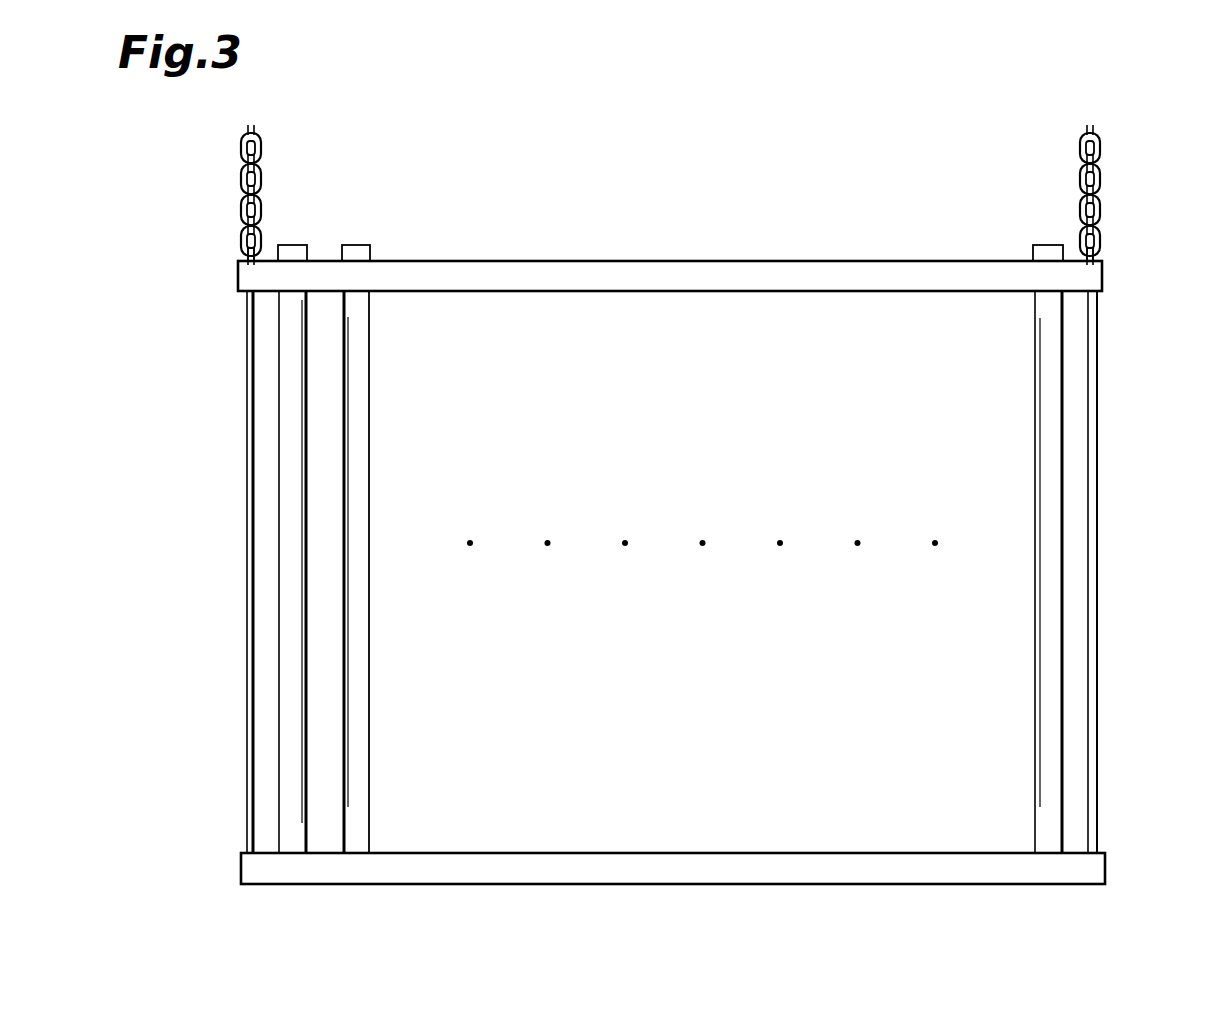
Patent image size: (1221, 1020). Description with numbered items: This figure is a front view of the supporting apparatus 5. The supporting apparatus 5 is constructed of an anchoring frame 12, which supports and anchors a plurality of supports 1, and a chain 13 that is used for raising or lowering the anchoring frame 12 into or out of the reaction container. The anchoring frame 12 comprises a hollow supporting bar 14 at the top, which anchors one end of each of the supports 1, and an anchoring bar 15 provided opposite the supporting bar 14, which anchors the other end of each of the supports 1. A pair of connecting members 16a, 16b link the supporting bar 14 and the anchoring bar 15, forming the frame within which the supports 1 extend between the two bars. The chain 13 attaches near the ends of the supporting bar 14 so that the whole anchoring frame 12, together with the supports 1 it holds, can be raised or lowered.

The supporting apparatus 5 is at (923, 113).
The support 1 is at (290, 410).
The anchoring frame 12 is at (1104, 260).
The chain 13 is at (259, 181).
The hollow supporting bar 14 is at (755, 273).
The anchoring bar 15 is at (1060, 871).
The connecting member 16a is at (247, 510).
The connecting member 16b is at (1097, 513).